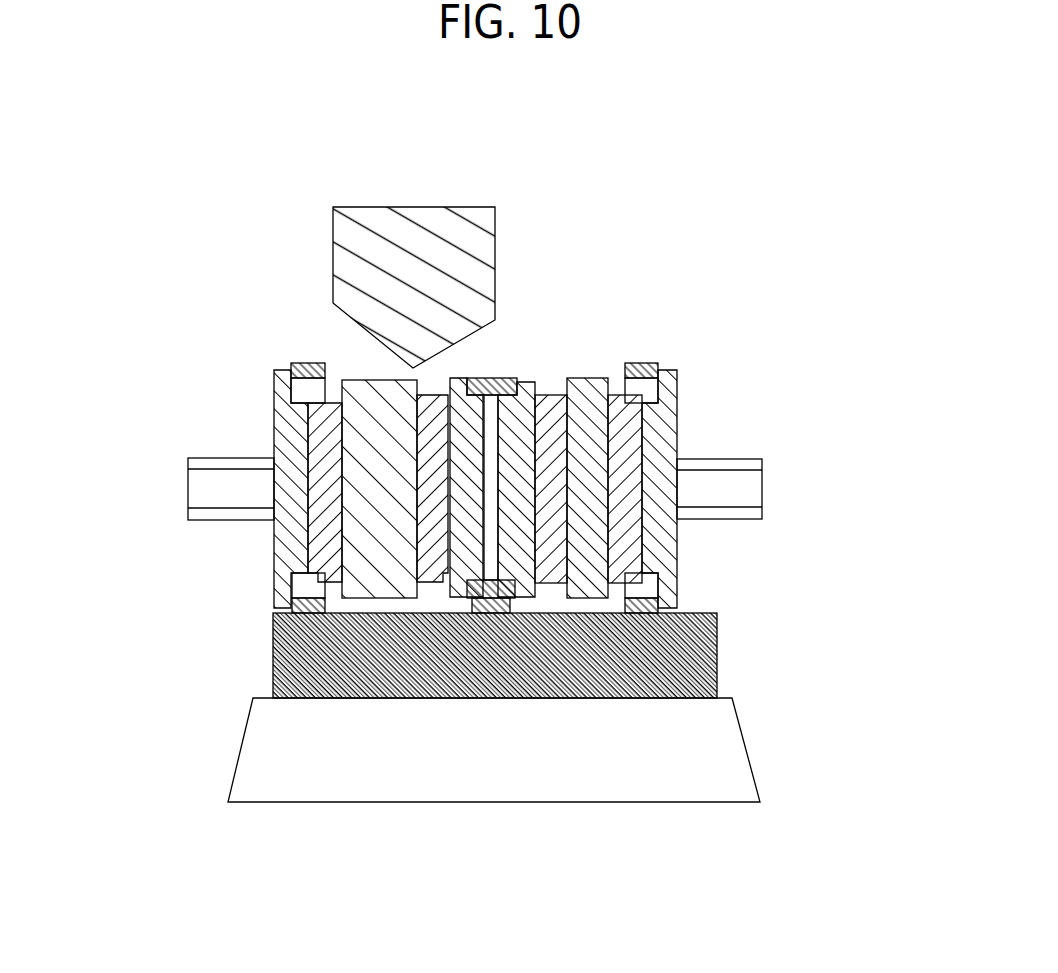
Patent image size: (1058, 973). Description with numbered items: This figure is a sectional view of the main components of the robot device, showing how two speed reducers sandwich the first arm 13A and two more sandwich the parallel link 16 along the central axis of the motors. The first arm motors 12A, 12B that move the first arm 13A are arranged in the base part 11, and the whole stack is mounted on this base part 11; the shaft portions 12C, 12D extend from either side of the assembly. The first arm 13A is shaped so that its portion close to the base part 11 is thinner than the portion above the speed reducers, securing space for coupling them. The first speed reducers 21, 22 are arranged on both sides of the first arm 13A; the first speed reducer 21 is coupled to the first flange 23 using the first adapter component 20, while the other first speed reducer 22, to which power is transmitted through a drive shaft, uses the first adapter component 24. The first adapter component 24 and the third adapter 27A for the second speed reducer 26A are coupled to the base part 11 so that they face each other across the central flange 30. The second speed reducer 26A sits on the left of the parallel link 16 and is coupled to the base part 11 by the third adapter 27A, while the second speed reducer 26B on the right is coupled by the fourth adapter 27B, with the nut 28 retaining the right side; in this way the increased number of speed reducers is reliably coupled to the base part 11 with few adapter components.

The base part 11 is at (732, 757).
The first arm motor 12A is at (164, 484).
The first arm motor 12B is at (195, 490).
The shaft 12C is at (811, 489).
The shaft 12D is at (757, 492).
The first arm 13A is at (442, 225).
The parallel link 16 is at (587, 385).
The first adapter component 20 is at (282, 389).
The first speed reducer 21 is at (318, 535).
The first speed reducer 22 is at (414, 377).
The first flange 23 is at (303, 365).
The first adapter component 24 is at (432, 408).
The second speed reducer 26A is at (555, 404).
The second speed reducer 26B is at (628, 560).
The third adapter 27A is at (524, 394).
The fourth adapter 27B is at (665, 543).
The nut 28 is at (642, 362).
The central flange 30 is at (500, 378).